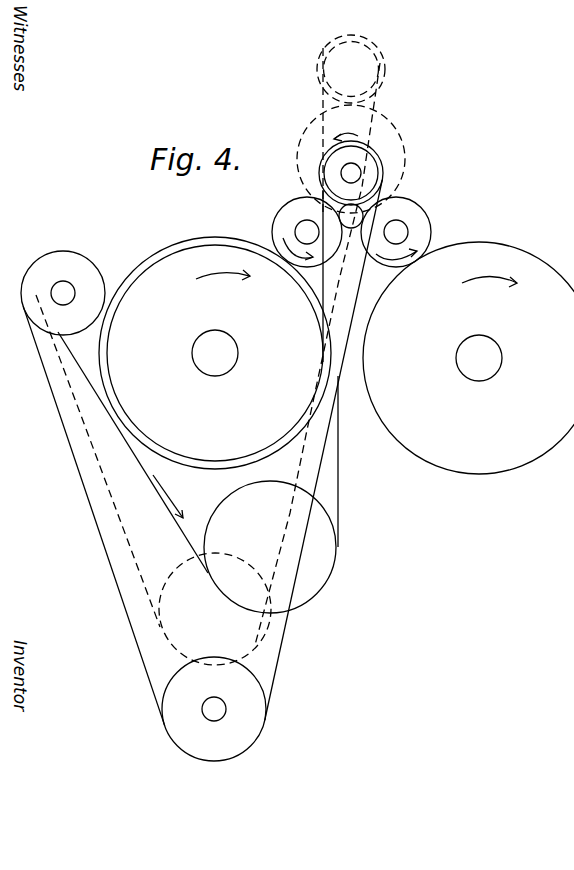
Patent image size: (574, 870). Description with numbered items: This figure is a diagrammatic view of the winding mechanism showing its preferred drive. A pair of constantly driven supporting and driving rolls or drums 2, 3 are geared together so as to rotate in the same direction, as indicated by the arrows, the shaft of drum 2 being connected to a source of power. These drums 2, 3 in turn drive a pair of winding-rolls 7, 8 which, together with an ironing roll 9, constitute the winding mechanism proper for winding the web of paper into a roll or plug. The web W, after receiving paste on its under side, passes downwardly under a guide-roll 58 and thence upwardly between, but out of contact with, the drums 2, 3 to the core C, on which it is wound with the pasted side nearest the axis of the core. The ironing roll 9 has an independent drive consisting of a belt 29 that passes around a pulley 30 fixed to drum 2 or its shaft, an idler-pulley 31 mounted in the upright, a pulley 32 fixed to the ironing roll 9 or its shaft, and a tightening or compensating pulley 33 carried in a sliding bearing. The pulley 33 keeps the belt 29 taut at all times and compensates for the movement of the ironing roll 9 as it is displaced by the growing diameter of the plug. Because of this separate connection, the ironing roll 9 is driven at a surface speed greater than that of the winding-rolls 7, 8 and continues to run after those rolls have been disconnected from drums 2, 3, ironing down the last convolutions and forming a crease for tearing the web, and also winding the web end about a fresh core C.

The drum 2 is at (176, 252).
The drum 3 is at (535, 260).
The winding-roll 7 is at (279, 210).
The winding-roll 8 is at (424, 219).
The ironing roll 9 is at (323, 149).
The belt 29 is at (83, 479).
The pulley 30 is at (224, 477).
The idler-pulley 31 is at (63, 293).
The pulley 32 is at (372, 166).
The tightening or compensating pulley 33 is at (214, 709).
The guide-roll 58 is at (270, 547).
The core C is at (366, 211).
The web W is at (339, 473).